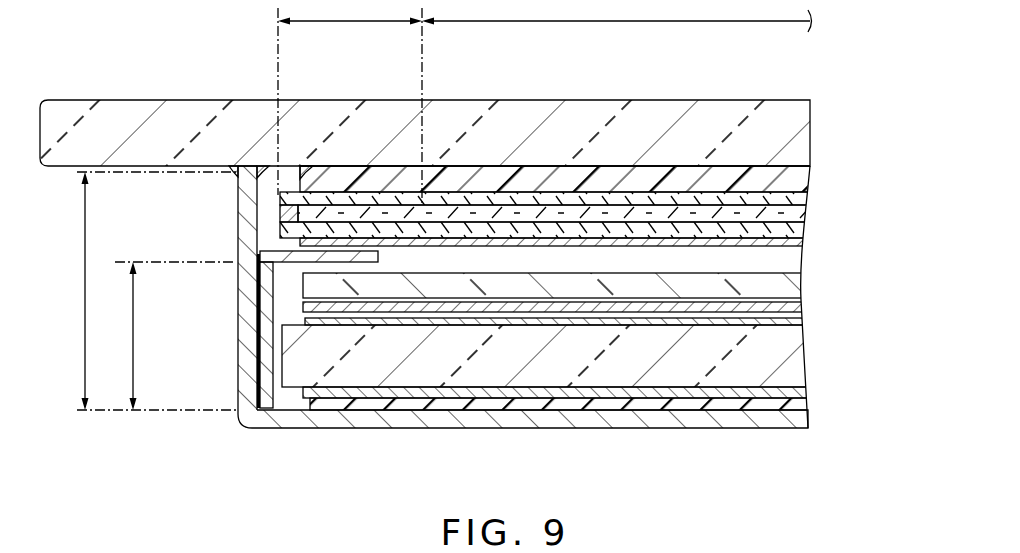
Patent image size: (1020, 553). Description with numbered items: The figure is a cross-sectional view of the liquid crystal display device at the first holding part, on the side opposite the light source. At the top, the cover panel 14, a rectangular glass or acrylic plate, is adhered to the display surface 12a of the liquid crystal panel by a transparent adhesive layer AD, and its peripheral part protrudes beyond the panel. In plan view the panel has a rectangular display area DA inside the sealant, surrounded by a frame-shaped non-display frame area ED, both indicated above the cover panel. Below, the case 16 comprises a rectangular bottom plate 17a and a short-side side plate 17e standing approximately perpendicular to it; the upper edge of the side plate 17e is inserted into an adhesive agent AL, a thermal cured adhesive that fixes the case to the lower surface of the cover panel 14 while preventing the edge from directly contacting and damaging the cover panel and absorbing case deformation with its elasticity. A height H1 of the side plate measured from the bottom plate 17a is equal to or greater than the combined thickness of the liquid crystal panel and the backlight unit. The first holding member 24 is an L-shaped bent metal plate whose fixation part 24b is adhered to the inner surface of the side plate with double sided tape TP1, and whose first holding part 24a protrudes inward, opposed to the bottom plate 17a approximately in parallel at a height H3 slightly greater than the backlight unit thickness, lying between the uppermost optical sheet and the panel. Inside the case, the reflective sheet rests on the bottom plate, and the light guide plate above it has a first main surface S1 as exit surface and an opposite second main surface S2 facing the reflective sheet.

The display surface 12a is at (516, 195).
The cover panel 14 is at (463, 106).
The case 16 is at (489, 339).
The bottom plate 17a is at (595, 419).
The short-side side plate 17e is at (245, 216).
The first holding member 24 is at (274, 318).
The first holding part 24a is at (296, 264).
The fixation part 24b is at (272, 330).
The adhesive agent AL is at (238, 170).
The adhesive layer AD is at (748, 172).
The double sided tape TP1 is at (258, 369).
The first main surface S1 is at (496, 319).
The second main surface S2 is at (447, 388).
The height of side plates H1 is at (70, 291).
The height to first holding part H3 is at (118, 336).
The frame area ED is at (350, 12).
The display area DA is at (617, 16).